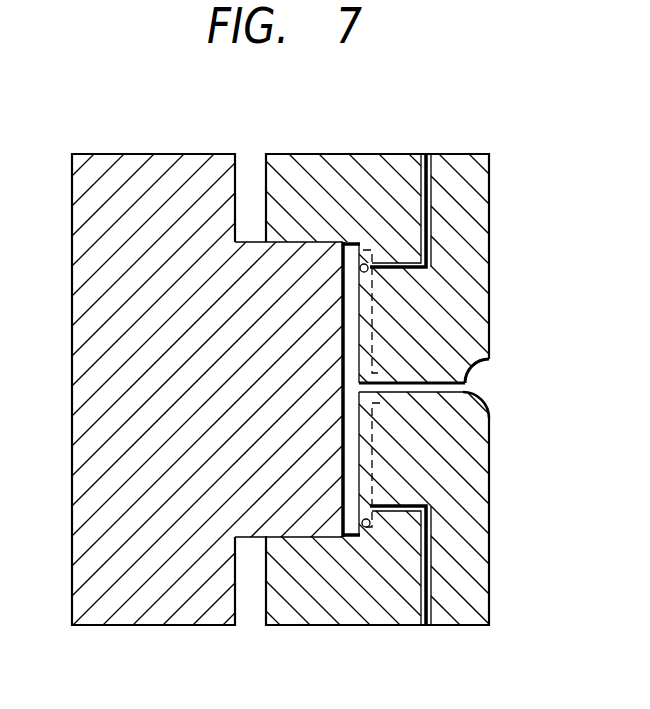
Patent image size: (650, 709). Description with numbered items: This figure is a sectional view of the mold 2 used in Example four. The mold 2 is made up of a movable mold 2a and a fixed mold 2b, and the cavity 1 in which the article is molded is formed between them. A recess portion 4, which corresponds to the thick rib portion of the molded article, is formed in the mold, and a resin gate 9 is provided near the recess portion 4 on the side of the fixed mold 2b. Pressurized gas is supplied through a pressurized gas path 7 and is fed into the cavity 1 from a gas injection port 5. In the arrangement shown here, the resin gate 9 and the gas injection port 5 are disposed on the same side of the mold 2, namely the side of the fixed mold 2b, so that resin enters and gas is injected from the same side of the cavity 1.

The cavity 1 is at (351, 520).
The mold 2 is at (313, 104).
The movable mold 2a is at (202, 156).
The fixed mold 2b is at (298, 156).
The recess portion 4 is at (366, 308).
The gas injection port 5 is at (366, 263).
The pressurized gas path 7 is at (426, 153).
The resin gate 9 is at (468, 360).